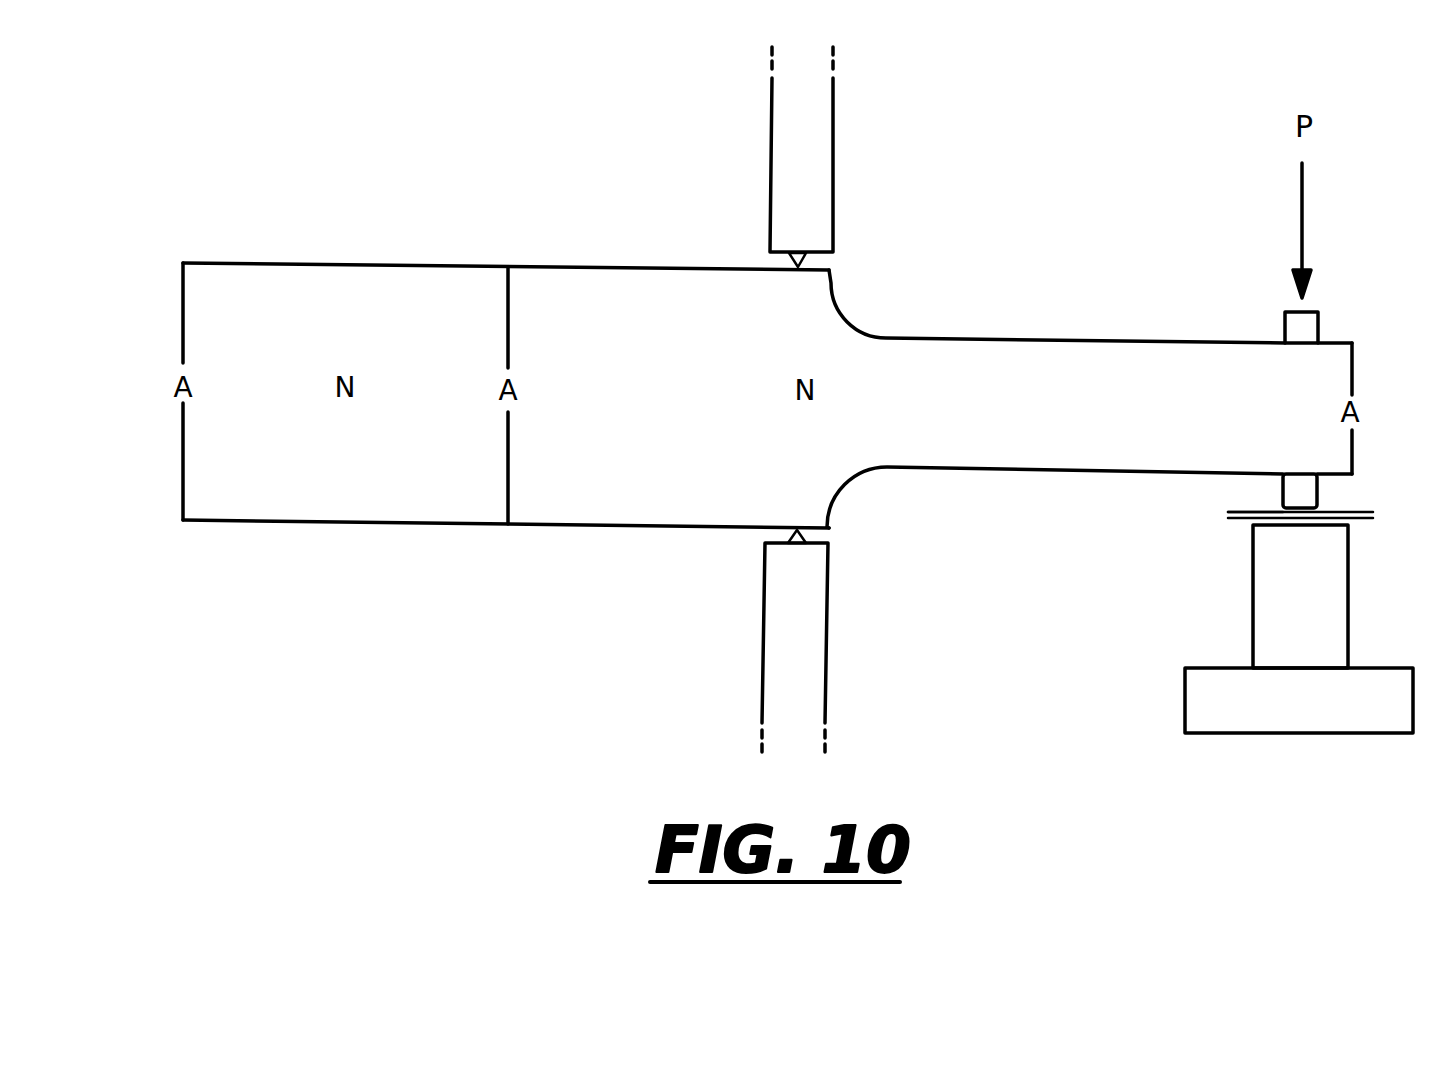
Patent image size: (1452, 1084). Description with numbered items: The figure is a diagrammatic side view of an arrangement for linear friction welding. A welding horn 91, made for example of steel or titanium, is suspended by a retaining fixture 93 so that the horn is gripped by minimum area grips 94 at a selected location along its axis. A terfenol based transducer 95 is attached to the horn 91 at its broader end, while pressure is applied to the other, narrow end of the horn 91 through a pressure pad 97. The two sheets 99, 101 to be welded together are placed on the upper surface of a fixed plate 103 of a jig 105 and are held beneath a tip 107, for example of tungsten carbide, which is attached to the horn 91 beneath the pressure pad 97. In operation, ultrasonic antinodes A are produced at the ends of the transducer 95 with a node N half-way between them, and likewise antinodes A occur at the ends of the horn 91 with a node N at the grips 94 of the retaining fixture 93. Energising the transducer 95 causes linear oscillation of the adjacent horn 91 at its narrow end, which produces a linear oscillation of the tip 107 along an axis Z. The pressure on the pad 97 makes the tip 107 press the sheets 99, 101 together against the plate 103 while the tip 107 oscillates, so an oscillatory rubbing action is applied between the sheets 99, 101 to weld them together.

The welding horn 91 is at (648, 515).
The retaining fixture 93 is at (812, 163).
The minimum area grips 94 is at (806, 258).
The terfenol based transducer 95 is at (345, 513).
The pressure pad 97 is at (1308, 330).
The sheet 99 is at (1373, 512).
The sheet 101 is at (1373, 518).
The fixed plate 103 is at (1333, 594).
The jig 105 is at (1224, 677).
The tip 107 is at (1283, 493).